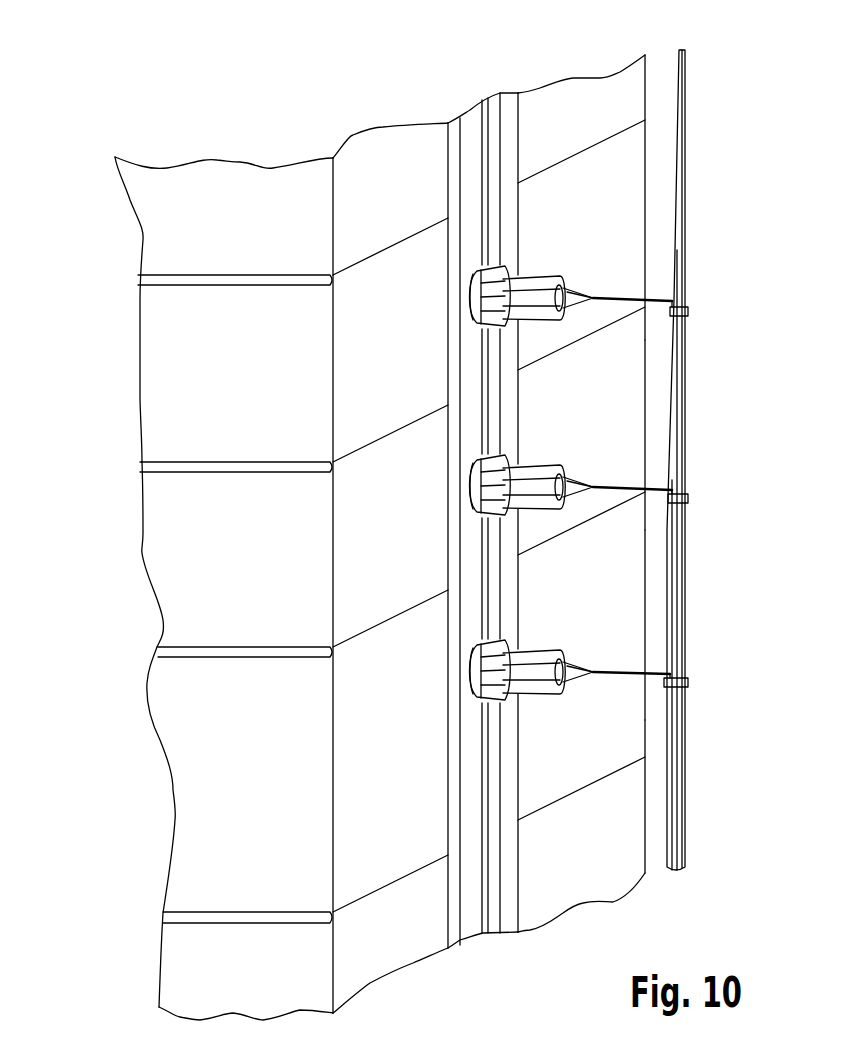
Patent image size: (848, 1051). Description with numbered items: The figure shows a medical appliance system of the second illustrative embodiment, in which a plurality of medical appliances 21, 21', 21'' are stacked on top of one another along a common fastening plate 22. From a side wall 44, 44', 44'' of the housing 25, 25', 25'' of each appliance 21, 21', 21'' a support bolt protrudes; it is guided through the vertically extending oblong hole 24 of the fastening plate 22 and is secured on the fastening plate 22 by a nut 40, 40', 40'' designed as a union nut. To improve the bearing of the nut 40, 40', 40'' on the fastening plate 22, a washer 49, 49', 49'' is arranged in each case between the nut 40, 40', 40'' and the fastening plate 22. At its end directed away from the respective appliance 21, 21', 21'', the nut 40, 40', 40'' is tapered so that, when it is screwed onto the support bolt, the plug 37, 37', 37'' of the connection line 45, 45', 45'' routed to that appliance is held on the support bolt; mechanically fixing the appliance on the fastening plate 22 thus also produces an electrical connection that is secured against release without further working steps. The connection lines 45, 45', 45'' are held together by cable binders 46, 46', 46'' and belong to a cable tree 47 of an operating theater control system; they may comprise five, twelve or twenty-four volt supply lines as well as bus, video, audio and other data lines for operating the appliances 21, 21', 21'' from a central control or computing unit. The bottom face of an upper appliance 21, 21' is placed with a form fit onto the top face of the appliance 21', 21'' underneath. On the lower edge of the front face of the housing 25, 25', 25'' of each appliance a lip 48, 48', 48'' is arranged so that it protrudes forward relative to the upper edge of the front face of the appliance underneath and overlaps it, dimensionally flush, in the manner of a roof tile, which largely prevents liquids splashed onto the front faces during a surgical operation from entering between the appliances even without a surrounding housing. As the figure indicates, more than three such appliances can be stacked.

The medical appliance 21 is at (240, 568).
The medical appliance 21' is at (102, 554).
The medical appliance 21'' is at (200, 833).
The fastening plate 22 is at (532, 114).
The oblong hole 24 is at (493, 113).
The housing 25 is at (708, 197).
The housing 25' is at (711, 435).
The housing 25'' is at (715, 625).
The plug 37 is at (590, 253).
The plug 37' is at (594, 442).
The plug 37'' is at (597, 627).
The nut 40 is at (548, 247).
The nut 40' is at (553, 434).
The nut 40'' is at (556, 620).
The side wall 44 is at (645, 154).
The side wall 44' is at (648, 339).
The side wall 44'' is at (651, 525).
The connection line 45 is at (682, 283).
The connection line 45' is at (685, 468).
The connection line 45'' is at (691, 653).
The cable binder 46 is at (721, 318).
The cable binder 46' is at (723, 501).
The cable binder 46'' is at (727, 688).
The cable tree 47 is at (697, 773).
The lip 48 is at (294, 452).
The lip 48' is at (303, 640).
The lip 48'' is at (305, 903).
The washer 49 is at (452, 296).
The washer 49' is at (452, 495).
The washer 49'' is at (450, 679).